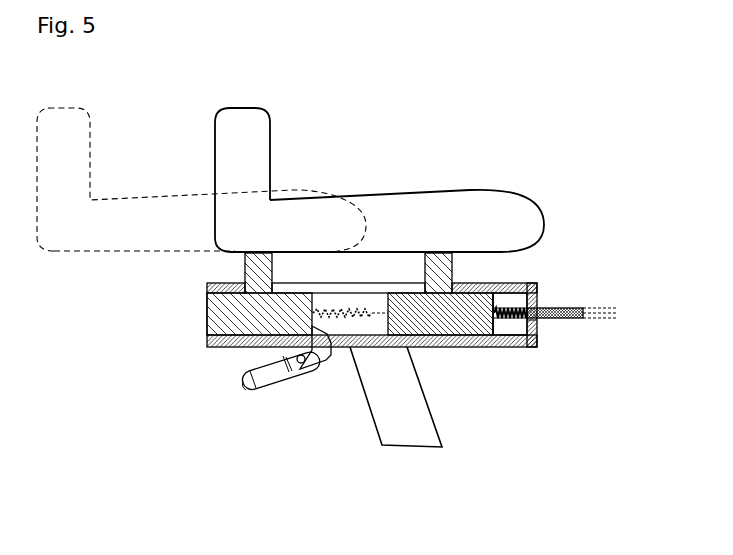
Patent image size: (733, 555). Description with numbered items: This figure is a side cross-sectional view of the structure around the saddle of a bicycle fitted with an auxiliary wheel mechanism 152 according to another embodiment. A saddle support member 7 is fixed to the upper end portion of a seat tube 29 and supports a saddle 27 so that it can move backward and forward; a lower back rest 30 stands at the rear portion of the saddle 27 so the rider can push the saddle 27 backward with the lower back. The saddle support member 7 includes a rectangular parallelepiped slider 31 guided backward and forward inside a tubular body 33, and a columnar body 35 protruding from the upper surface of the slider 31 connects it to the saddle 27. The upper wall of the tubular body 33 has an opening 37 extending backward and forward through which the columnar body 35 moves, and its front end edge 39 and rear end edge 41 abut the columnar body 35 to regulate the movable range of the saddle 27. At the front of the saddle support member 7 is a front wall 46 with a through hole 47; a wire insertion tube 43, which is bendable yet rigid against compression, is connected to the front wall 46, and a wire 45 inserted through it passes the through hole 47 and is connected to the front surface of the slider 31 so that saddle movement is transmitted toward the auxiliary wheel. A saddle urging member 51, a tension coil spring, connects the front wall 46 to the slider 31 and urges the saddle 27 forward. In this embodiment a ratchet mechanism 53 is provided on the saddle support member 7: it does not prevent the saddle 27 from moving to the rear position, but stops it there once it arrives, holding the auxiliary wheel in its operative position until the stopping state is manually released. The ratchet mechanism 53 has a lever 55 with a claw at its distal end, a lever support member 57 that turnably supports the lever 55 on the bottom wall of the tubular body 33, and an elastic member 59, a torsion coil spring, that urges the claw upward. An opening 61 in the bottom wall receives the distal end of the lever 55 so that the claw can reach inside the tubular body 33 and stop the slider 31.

The saddle support member 7 is at (227, 350).
The saddle 27 is at (438, 202).
The seat tube 29 is at (383, 418).
The lower back rest 30 is at (257, 143).
The slider 31 is at (468, 348).
The tubular body 33 is at (443, 348).
The columnar body 35 is at (440, 258).
The opening 37 is at (385, 283).
The front end edge 39 is at (478, 277).
The rear end edge 41 is at (266, 281).
The wire insertion tube 43 is at (560, 306).
The wire 45 is at (588, 306).
The front wall 46 is at (543, 326).
The through hole 47 is at (547, 349).
The saddle urging member 51 is at (518, 348).
The ratchet mechanism 53 is at (242, 388).
The lever 55 is at (263, 385).
The lever support member 57 is at (312, 373).
The elastic member 59 is at (290, 367).
The opening 61 is at (335, 362).
The auxiliary wheel mechanism 152 is at (204, 343).